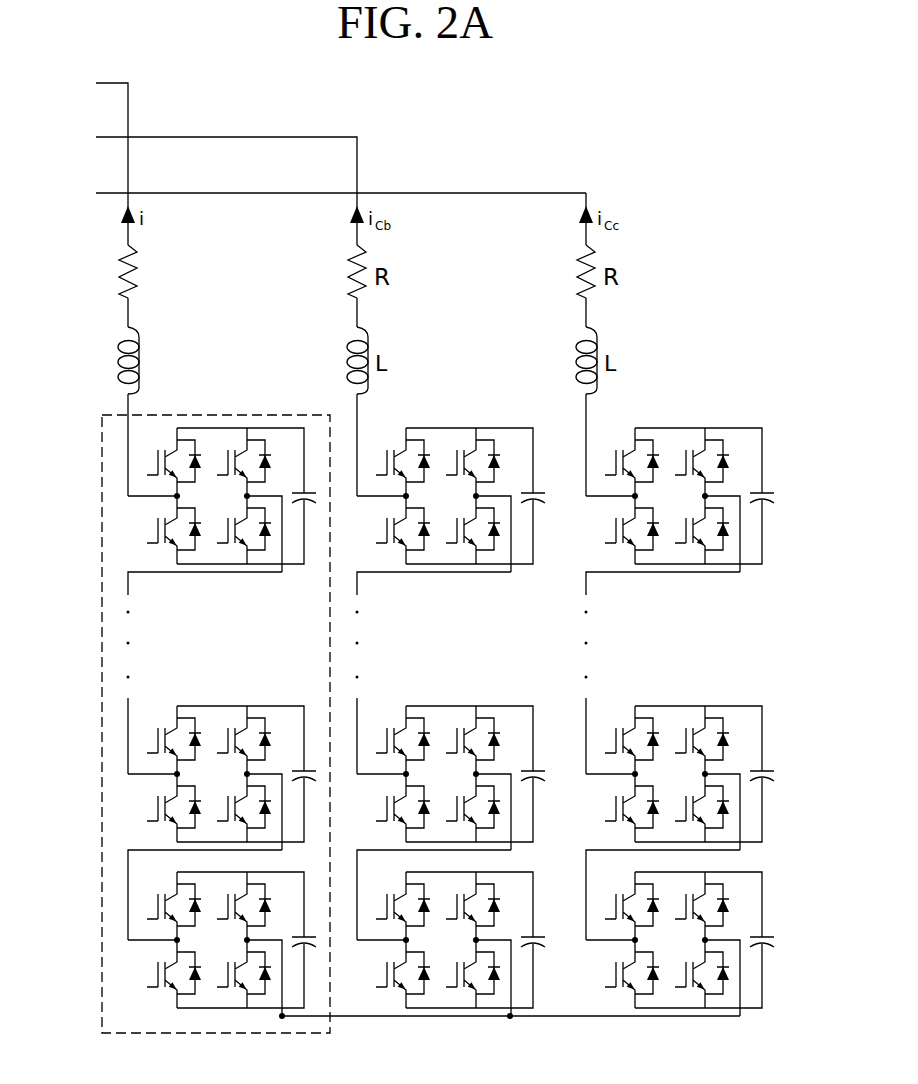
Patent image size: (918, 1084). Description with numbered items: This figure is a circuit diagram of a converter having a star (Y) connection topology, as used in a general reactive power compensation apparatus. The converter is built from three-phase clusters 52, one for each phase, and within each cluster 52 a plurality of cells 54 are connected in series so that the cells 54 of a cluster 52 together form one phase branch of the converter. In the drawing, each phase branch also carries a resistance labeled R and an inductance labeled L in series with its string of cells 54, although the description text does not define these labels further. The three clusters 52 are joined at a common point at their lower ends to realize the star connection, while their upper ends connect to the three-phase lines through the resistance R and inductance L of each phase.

The three-phase cluster 52 is at (101, 579).
The cell 54 is at (142, 485).
The filter resistor R is at (140, 271).
The filter inductor L is at (138, 360).